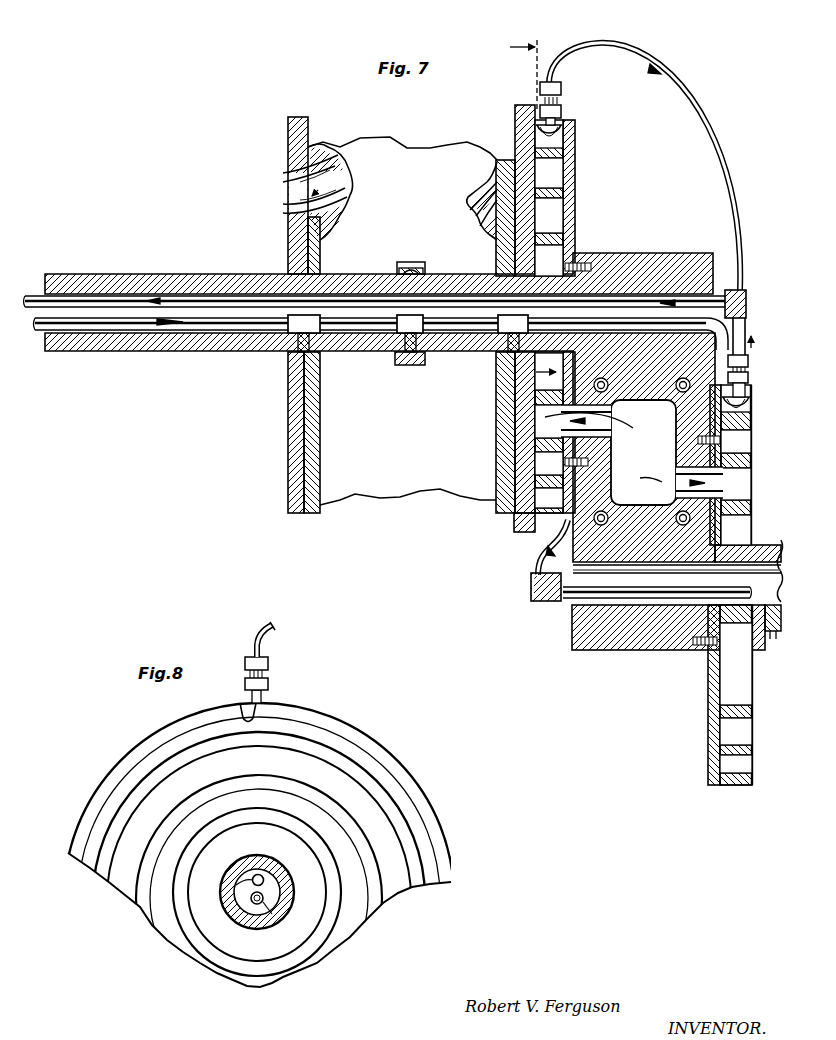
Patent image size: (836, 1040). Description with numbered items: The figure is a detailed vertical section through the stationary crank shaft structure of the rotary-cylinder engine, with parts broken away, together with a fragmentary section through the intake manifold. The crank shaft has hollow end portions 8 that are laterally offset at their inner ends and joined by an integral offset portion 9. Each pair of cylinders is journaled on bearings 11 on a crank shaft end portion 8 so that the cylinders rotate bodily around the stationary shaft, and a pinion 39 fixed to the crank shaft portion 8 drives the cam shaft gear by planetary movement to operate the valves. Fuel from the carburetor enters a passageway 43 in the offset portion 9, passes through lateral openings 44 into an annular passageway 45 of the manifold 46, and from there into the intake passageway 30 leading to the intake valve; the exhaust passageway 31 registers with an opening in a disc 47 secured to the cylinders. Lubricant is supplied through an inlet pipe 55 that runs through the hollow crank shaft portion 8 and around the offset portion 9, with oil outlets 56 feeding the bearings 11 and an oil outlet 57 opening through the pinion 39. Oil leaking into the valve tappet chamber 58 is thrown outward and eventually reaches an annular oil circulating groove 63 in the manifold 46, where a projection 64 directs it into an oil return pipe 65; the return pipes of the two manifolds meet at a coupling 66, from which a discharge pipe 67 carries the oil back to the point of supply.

In FIG. 7, the crank shaft end portion 8 is at (203, 273).
In FIG. 8, the crank shaft end portion 8 is at (250, 927).
In FIG. 7, the offset portion 9 is at (672, 262).
In FIG. 7, the bearing 11 is at (288, 357).
In FIG. 7, the intake passageway 30 is at (494, 200).
In FIG. 7, the exhaust passageway 31 is at (293, 200).
In FIG. 7, the pinion 39 is at (416, 262).
In FIG. 7, the passageway 43 is at (556, 528).
In FIG. 7, the lateral opening 44 is at (575, 426).
In FIG. 7, the annular passageway 45 is at (575, 211).
In FIG. 7, the manifold 46 is at (575, 189).
In FIG. 8, the manifold 46 is at (372, 746).
In FIG. 7, the disc 47 is at (290, 140).
In FIG. 7, the inlet pipe 55 is at (128, 332).
In FIG. 8, the inlet pipe 55 is at (277, 923).
In FIG. 7, the oil outlet 56 is at (342, 352).
In FIG. 7, the oil outlet 57 is at (412, 365).
In FIG. 7, the valve tappet chamber 58 is at (337, 430).
In FIG. 7, the oil circulating groove 63 is at (565, 148).
In FIG. 8, the oil circulating groove 63 is at (388, 773).
In FIG. 7, the projection 64 is at (564, 140).
In FIG. 8, the projection 64 is at (250, 722).
In FIG. 7, the oil return pipe 65 is at (640, 49).
In FIG. 8, the oil return pipe 65 is at (268, 647).
In FIG. 7, the coupling 66 is at (747, 303).
In FIG. 7, the discharge pipe 67 is at (116, 297).
In FIG. 8, the discharge pipe 67 is at (223, 908).